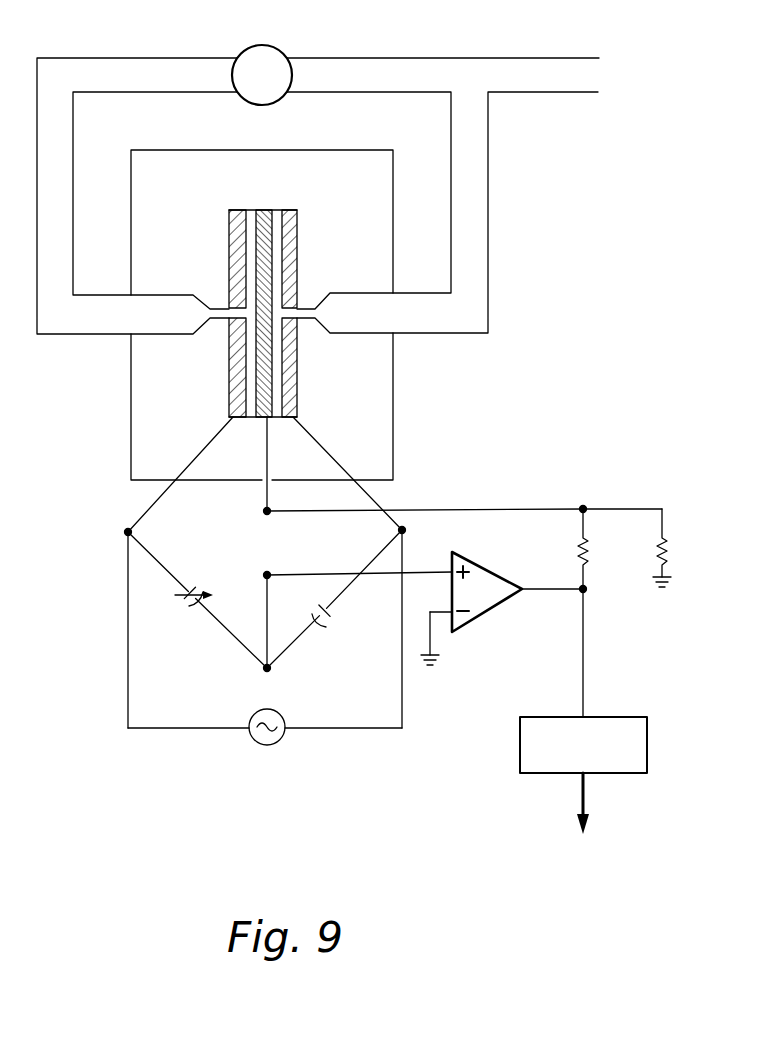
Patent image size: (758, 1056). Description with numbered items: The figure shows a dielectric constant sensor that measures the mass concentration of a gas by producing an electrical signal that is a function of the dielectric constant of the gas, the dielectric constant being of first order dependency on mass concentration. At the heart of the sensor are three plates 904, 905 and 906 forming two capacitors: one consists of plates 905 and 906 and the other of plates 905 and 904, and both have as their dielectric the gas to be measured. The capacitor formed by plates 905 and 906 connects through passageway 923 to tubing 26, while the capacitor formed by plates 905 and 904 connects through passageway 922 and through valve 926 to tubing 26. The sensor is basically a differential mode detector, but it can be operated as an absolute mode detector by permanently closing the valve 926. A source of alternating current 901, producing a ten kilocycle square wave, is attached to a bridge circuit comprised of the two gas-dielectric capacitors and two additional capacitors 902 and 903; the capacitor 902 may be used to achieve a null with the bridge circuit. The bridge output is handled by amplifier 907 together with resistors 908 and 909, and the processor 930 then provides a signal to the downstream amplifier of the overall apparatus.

The tubing 26 is at (598, 92).
The valve 926 is at (277, 47).
The plate 904 is at (235, 209).
The plate 905 is at (267, 209).
The plate 906 is at (288, 209).
The passageway 922 is at (162, 318).
The passageway 923 is at (362, 313).
The source of alternating current 901 is at (262, 745).
The capacitor 902 is at (190, 603).
The capacitor 903 is at (322, 620).
The amplifier 907 is at (493, 613).
The resistor 908 is at (585, 551).
The resistor 909 is at (665, 551).
The processor 930 is at (520, 755).